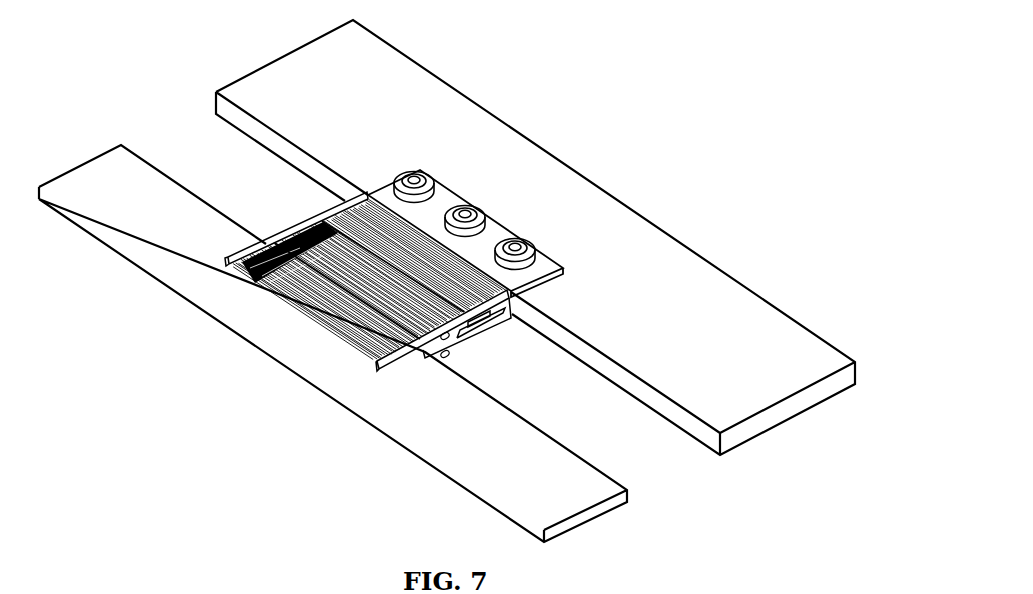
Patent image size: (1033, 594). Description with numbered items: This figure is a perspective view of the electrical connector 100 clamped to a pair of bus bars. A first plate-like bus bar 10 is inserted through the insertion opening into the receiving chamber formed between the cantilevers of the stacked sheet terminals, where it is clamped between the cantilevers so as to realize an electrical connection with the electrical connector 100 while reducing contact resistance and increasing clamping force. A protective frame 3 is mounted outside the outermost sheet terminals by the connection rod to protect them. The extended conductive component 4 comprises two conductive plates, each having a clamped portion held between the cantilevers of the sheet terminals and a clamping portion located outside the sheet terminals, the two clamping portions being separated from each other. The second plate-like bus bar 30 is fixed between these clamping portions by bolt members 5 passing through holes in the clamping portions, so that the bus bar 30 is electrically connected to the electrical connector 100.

The plate-like bus bar 10 is at (197, 244).
The plate-like bus bar 30 is at (498, 168).
The electrical connector 100 is at (290, 270).
The extended conductive component 4 is at (457, 200).
The bolt members 5 is at (535, 258).
The protective frame 3 is at (471, 345).